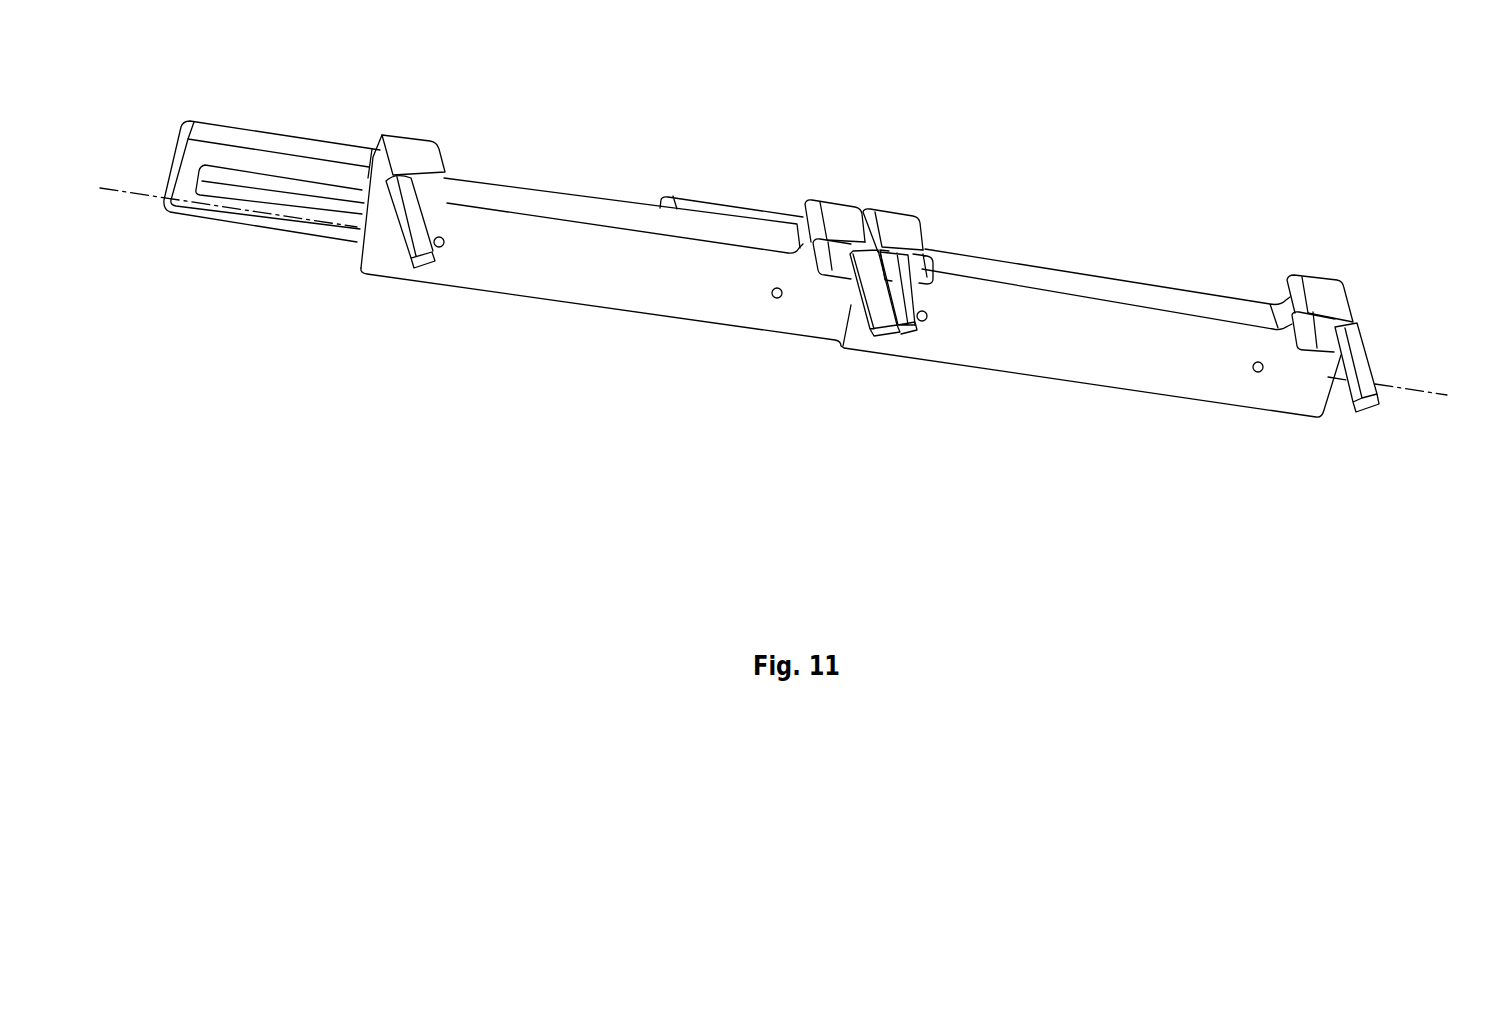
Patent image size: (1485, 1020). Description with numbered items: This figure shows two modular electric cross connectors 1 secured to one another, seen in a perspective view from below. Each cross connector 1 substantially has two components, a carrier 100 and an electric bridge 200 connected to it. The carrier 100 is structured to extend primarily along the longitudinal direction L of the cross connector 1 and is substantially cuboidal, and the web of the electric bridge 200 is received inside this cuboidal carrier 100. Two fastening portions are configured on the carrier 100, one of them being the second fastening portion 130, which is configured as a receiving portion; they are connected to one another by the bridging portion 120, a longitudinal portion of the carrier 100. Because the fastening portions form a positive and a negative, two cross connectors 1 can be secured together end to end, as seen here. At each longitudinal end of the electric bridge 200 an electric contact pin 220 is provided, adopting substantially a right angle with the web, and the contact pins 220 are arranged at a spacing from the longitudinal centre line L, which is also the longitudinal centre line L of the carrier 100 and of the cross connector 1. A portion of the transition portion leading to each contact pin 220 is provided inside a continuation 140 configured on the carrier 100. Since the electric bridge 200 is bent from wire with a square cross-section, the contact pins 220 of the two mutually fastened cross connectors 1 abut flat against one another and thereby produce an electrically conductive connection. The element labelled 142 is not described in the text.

The modular electric cross connector 1 is at (498, 343).
The carrier 100 is at (632, 317).
The bridging portion 120 is at (548, 236).
The second fastening portion 130 is at (222, 131).
The continuation 140 is at (412, 143).
The guide wall 142 is at (610, 215).
The electric bridge 200 is at (913, 308).
The electric contact pin 220 is at (418, 222).
The longitudinal centre line L is at (783, 284).